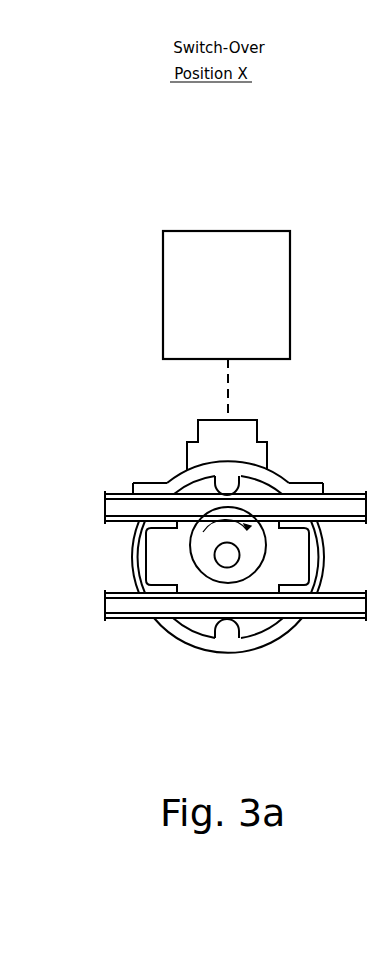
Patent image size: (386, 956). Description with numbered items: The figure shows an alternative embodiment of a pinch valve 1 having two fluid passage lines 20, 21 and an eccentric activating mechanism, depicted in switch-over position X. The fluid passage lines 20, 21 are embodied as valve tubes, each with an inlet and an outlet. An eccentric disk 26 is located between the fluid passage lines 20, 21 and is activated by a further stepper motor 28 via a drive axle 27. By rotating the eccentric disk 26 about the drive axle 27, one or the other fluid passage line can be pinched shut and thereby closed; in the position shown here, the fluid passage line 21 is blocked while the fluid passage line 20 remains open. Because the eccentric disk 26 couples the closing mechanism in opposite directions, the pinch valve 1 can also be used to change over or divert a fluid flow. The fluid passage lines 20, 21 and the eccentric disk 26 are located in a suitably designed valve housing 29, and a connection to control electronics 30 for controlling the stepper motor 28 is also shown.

The pinch valve 1 is at (200, 588).
The fluid passage line 20 is at (339, 620).
The fluid passage line 21 is at (104, 510).
The eccentric disk 26 is at (247, 563).
The drive axle 27 is at (225, 557).
The stepper motor 28 is at (200, 434).
The valve housing 29 is at (228, 652).
The control electronics 30 is at (186, 300).